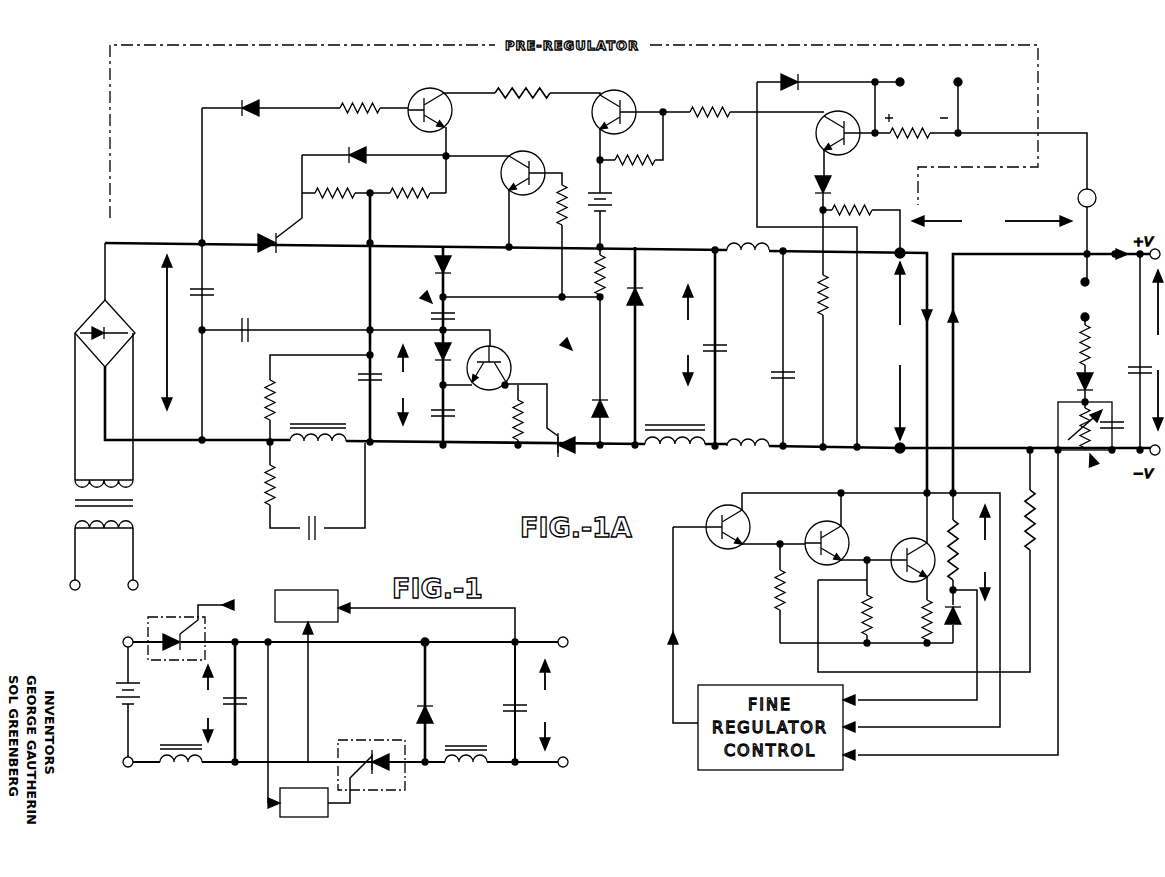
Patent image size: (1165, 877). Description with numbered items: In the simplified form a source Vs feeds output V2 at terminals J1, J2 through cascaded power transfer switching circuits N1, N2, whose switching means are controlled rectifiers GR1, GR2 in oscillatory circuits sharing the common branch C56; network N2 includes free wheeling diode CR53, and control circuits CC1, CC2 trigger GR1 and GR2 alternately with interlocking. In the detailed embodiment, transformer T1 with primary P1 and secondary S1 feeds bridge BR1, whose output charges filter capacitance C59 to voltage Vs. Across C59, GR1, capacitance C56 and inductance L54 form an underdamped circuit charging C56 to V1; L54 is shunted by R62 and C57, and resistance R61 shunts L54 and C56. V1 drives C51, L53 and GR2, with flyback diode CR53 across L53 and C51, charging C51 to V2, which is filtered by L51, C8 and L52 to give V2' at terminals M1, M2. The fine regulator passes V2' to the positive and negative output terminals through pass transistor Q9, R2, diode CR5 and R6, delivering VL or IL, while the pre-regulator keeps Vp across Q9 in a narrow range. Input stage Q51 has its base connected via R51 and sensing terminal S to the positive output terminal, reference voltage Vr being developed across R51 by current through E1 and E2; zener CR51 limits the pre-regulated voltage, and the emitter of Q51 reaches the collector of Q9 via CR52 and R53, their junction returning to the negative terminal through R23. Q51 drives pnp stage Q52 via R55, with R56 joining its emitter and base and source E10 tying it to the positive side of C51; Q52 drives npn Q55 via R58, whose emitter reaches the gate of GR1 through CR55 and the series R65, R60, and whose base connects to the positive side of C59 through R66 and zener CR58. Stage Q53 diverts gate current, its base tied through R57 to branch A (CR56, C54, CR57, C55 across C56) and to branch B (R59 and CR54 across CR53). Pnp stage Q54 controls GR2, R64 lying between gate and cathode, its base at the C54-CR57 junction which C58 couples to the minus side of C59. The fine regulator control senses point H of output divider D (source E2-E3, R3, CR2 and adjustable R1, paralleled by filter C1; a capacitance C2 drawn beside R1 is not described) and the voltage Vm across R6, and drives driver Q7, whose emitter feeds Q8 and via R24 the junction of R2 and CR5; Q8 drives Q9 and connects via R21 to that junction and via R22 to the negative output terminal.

In FIG. 1A, the bridge rectifier BR1 is at (100, 318).
In FIG. 1A, the power transformer T1 is at (114, 535).
In FIG. 1A, the secondary S1 is at (104, 470).
In FIG. 1A, the primary P1 is at (104, 541).
In FIG. 1A, the source voltage Vs is at (142, 332).
In FIG. 1, the source voltage Vs is at (116, 694).
In FIG. 1A, the filter capacitance C59 is at (217, 293).
In FIG. 1A, the capacitance C58 is at (259, 326).
In FIG. 1A, the capacitance C56 is at (353, 372).
In FIG. 1, the capacitance C56 is at (242, 702).
In FIG. 1A, the resistance R61 is at (255, 400).
In FIG. 1A, the resistance R62 is at (255, 485).
In FIG. 1A, the capacitance C57 is at (318, 518).
In FIG. 1A, the inductance L54 is at (318, 446).
In FIG. 1, the inductance L54 is at (181, 776).
In FIG. 1A, the zener diode CR58 is at (251, 121).
In FIG. 1A, the resistance R66 is at (360, 119).
In FIG. 1A, the diode CR55 is at (373, 162).
In FIG. 1A, the resistance R60 is at (335, 205).
In FIG. 1A, the resistance R65 is at (408, 205).
In FIG. 1A, the controlled rectifier GR1 is at (277, 254).
In FIG. 1, the controlled rectifier GR1 is at (200, 635).
In FIG. 1A, the npn stage Q55 is at (430, 100).
In FIG. 1A, the resistance R58 is at (522, 84).
In FIG. 1A, the pnp stage Q52 is at (614, 101).
In FIG. 1A, the resistance R55 is at (710, 124).
In FIG. 1A, the resistance R56 is at (635, 172).
In FIG. 1A, the npn stage Q53 is at (506, 173).
In FIG. 1A, the resistance R57 is at (547, 205).
In FIG. 1A, the DC energizing source E10 is at (610, 207).
In FIG. 1A, the resistance R59 is at (611, 275).
In FIG. 1A, the diode CR56 is at (460, 268).
In FIG. 1A, the capacitance C54 is at (455, 315).
In FIG. 1A, the diode CR57 is at (434, 355).
In FIG. 1A, the capacitance C55 is at (452, 425).
In FIG. 1A, the voltage across C56 V1 is at (404, 385).
In FIG. 1, the voltage across C56 V1 is at (207, 703).
In FIG. 1A, the branch A is at (425, 297).
In FIG. 1A, the branch B is at (566, 345).
In FIG. 1A, the pnp stage Q54 is at (501, 368).
In FIG. 1A, the resistance R64 is at (506, 420).
In FIG. 1A, the controlled rectifier GR2 is at (568, 457).
In FIG. 1, the controlled rectifier GR2 is at (390, 784).
In FIG. 1A, the diode CR54 is at (588, 399).
In FIG. 1A, the flyback diode CR53 is at (649, 287).
In FIG. 1, the flyback diode CR53 is at (410, 702).
In FIG. 1A, the output voltage V2 is at (687, 335).
In FIG. 1, the output voltage V2 is at (545, 705).
In FIG. 1A, the inductance L53 is at (675, 448).
In FIG. 1, the inductance L53 is at (466, 771).
In FIG. 1A, the inductance L52 is at (748, 456).
In FIG. 1A, the inductance L51 is at (748, 265).
In FIG. 1A, the filter capacitance C51 is at (725, 337).
In FIG. 1, the filter capacitance C51 is at (507, 702).
In FIG. 1A, the capacitance C8 is at (775, 387).
In FIG. 1A, the resistor R23 is at (814, 295).
In FIG. 1A, the diode CR52 is at (801, 183).
In FIG. 1A, the resistance R53 is at (852, 202).
In FIG. 1A, the input control stage Q51 is at (837, 121).
In FIG. 1A, the zener diode CR51 is at (803, 73).
In FIG. 1A, the auxiliary supply terminal E1 is at (909, 76).
In FIG. 1A, the auxiliary supply terminal E2 is at (1021, 180).
In FIG. 1A, the reference voltage Vr is at (916, 111).
In FIG. 1A, the resistance R51 is at (910, 144).
In FIG. 1A, the sensing terminal S is at (1087, 198).
In FIG. 1A, the series control branch voltage Vp is at (992, 224).
In FIG. 1A, the pre-regulator output terminal M1 is at (908, 246).
In FIG. 1A, the pre-regulator output terminal M2 is at (908, 460).
In FIG. 1A, the pre-regulator output voltage V2' is at (901, 351).
In FIG. 1A, the regulated output current IL is at (1114, 266).
In FIG. 1A, the auxiliary supply terminal E3 is at (1073, 320).
In FIG. 1A, the resistance R3 is at (1094, 345).
In FIG. 1A, the output filter C1 is at (1136, 361).
In FIG. 1A, the diode CR2 is at (1066, 382).
In FIG. 1A, the point H is at (1090, 402).
In FIG. 1A, the adjustable resistance R1 is at (1085, 426).
In FIG. 1A, the capacitor C2 is at (1115, 424).
In FIG. 1A, the output divider D is at (1092, 460).
In FIG. 1A, the regulated DC output voltage VL is at (1155, 350).
In FIG. 1A, the resistance R22 is at (1021, 520).
In FIG. 1A, the npn driver stage Q7 is at (720, 521).
In FIG. 1A, the npn driver Q8 is at (822, 537).
In FIG. 1A, the pass transistor Q9 is at (907, 557).
In FIG. 1A, the resistance R24 is at (765, 590).
In FIG. 1A, the resistance R21 is at (855, 615).
In FIG. 1A, the resistance R2 is at (914, 620).
In FIG. 1A, the resistance R6 is at (945, 550).
In FIG. 1A, the diode CR5 is at (958, 638).
In FIG. 1A, the current-sense voltage Vm is at (987, 553).
In FIG. 1, the power transfer switching circuit N1 is at (181, 730).
In FIG. 1, the control circuit CC1 is at (306, 606).
In FIG. 1, the control circuit CC2 is at (304, 802).
In FIG. 1, the power transfer switching circuit N2 is at (425, 636).
In FIG. 1, the output terminal J1 is at (560, 631).
In FIG. 1, the output terminal J2 is at (560, 777).